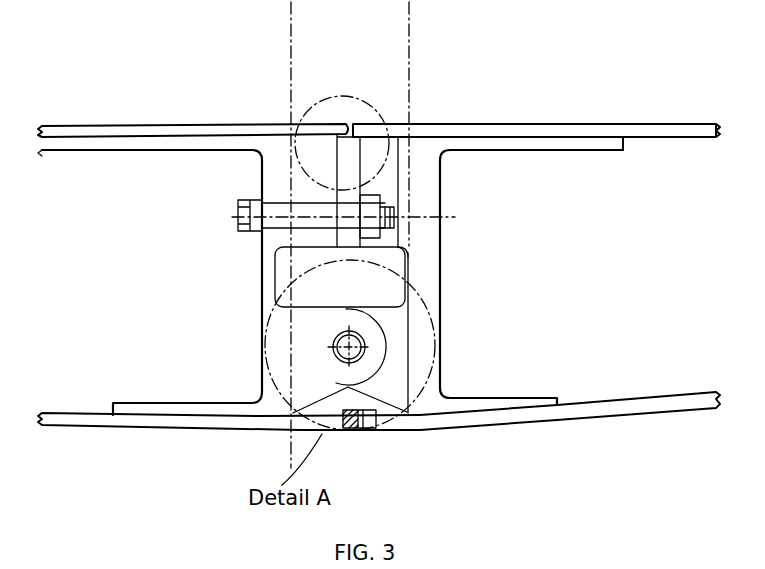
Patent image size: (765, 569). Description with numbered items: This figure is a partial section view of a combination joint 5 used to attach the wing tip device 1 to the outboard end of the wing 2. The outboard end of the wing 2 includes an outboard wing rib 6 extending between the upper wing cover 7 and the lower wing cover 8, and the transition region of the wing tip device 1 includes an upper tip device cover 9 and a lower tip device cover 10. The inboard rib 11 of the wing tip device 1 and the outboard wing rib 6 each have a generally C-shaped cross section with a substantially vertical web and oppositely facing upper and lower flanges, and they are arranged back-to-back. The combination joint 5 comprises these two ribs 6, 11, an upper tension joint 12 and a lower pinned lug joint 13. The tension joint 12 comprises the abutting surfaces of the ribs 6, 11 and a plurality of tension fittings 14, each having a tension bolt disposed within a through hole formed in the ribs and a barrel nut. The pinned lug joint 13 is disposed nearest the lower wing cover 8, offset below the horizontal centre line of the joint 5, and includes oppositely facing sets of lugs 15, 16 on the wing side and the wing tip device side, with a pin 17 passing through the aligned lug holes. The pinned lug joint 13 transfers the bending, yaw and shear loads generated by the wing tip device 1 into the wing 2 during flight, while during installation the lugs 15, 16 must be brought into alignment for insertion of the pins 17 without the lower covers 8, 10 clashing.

The wing tip device 1 is at (582, 75).
The wing 2 is at (111, 60).
The combination joint 5 is at (389, 71).
The outboard wing rib 6 is at (264, 166).
The upper wing cover 7 is at (186, 131).
The lower wing cover 8 is at (202, 430).
The upper tip device cover 9 is at (660, 131).
The lower tip device cover 10 is at (662, 403).
The inboard rib 11 is at (430, 286).
The tension joint 12 is at (263, 231).
The pinned lug joint 13 is at (326, 358).
The tension fitting 14 is at (393, 211).
The set of lugs 15 is at (368, 350).
The set of lugs 16 is at (396, 380).
The pin 17 is at (357, 362).